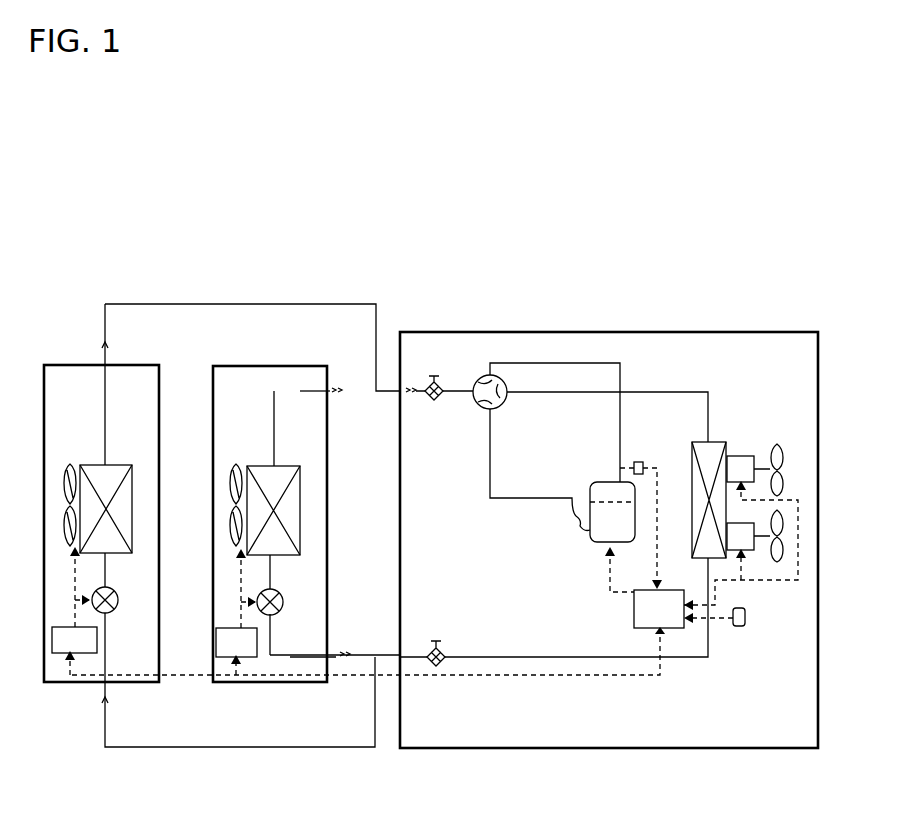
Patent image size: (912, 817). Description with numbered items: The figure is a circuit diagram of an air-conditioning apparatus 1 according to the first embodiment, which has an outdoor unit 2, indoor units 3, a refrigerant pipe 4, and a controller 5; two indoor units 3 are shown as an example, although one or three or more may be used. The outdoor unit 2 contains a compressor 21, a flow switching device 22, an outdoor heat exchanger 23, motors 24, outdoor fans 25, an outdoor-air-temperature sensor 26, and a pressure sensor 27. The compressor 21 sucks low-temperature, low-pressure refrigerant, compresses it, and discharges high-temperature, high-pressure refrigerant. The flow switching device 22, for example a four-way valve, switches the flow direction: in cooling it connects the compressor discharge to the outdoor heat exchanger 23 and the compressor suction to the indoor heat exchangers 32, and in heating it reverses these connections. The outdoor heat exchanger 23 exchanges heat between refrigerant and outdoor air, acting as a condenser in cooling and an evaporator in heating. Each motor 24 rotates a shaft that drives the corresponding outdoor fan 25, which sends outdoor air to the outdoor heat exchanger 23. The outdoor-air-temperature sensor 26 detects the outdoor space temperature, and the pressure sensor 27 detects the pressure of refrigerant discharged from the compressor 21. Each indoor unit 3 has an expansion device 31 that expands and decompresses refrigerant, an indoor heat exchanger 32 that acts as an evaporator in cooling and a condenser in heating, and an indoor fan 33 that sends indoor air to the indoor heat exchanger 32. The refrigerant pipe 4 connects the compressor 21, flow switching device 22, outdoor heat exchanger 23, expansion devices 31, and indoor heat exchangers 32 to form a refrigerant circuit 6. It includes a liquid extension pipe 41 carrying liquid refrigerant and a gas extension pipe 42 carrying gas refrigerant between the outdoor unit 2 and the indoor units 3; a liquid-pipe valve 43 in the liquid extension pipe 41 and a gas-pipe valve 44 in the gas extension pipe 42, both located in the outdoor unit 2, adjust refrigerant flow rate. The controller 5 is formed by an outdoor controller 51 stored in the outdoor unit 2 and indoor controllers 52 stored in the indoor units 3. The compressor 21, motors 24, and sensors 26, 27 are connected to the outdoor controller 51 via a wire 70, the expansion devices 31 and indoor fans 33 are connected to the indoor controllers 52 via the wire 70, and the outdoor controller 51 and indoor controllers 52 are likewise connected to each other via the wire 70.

The air-conditioning apparatus 1 is at (776, 226).
The outdoor unit 2 is at (747, 326).
The indoor unit 3 is at (132, 360).
The refrigerant pipe 4 is at (368, 452).
The controller 5 is at (590, 626).
The refrigerant circuit 6 is at (696, 680).
The compressor 21 is at (606, 488).
The flow switching device 22 is at (500, 406).
The outdoor heat exchanger 23 is at (712, 442).
The motor 24 is at (744, 456).
The outdoor fan 25 is at (782, 450).
The outdoor-air-temperature sensor 26 is at (734, 626).
The pressure sensor 27 is at (640, 462).
The expansion device 31 is at (117, 607).
The indoor heat exchanger 32 is at (112, 470).
The indoor fan 33 is at (72, 486).
The liquid extension pipe 41 is at (360, 660).
The gas extension pipe 42 is at (356, 395).
The liquid-pipe valve 43 is at (436, 666).
The gas-pipe valve 44 is at (436, 400).
The outdoor controller 51 is at (636, 612).
The indoor controller 52 is at (66, 628).
The wire 70 is at (524, 676).